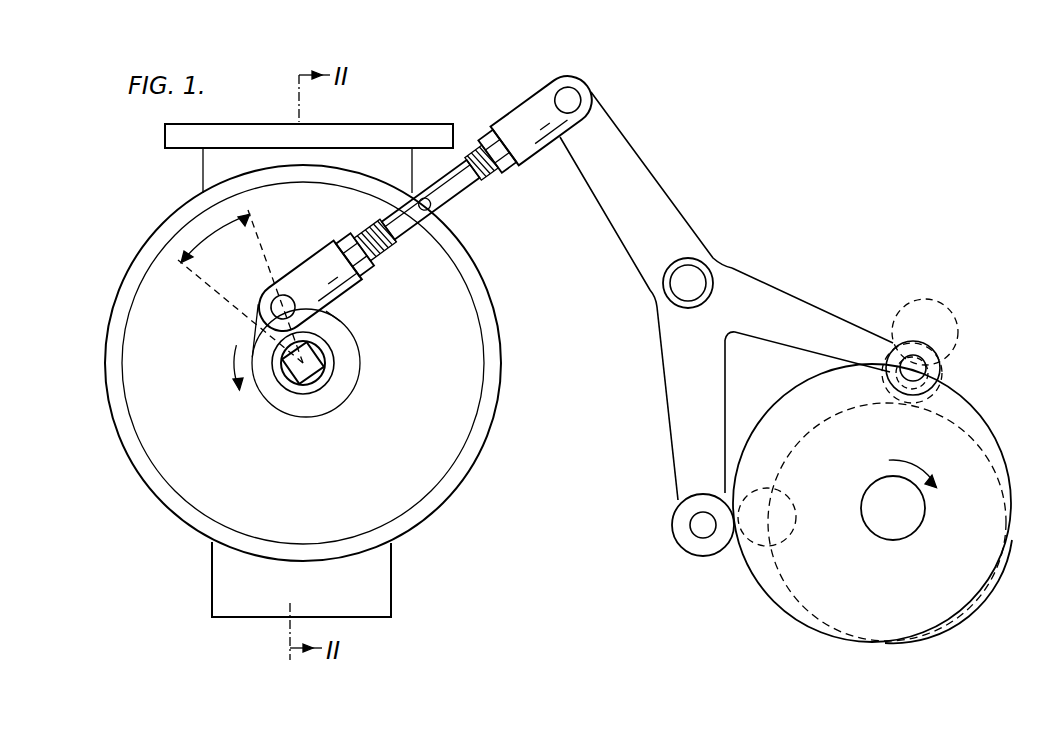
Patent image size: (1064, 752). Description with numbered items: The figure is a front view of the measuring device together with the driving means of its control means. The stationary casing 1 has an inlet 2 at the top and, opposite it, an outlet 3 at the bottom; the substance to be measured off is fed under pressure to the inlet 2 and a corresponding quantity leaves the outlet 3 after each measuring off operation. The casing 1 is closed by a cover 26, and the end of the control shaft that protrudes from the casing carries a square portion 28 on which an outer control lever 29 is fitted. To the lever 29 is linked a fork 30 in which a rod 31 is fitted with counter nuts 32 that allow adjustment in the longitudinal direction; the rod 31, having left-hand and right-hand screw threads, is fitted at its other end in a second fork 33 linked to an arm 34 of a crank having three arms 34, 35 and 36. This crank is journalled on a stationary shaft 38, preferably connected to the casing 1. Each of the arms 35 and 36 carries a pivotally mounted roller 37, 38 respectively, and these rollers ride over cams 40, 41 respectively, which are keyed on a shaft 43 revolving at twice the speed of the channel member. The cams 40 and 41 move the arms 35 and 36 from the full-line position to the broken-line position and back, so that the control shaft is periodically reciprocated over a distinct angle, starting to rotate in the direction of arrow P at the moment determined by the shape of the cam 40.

The stationary casing 1 is at (500, 345).
The inlet 2 is at (446, 126).
The outlet 3 is at (377, 595).
The cover 26 is at (462, 414).
The square portion 28 is at (289, 396).
The outer control lever 29 is at (316, 334).
The fork 30 is at (291, 277).
The rod 31 is at (455, 186).
The counter nuts 32 is at (363, 262).
The second fork 33 is at (541, 105).
The arm of the crank 34 is at (645, 174).
The arm of the crank 35 is at (681, 412).
The arm of the crank 36 is at (766, 296).
The roller 37 is at (676, 530).
The stationary shaft 38 is at (672, 286).
The cam 40 is at (790, 395).
The cam 41 is at (993, 583).
The shaft 43 is at (905, 525).